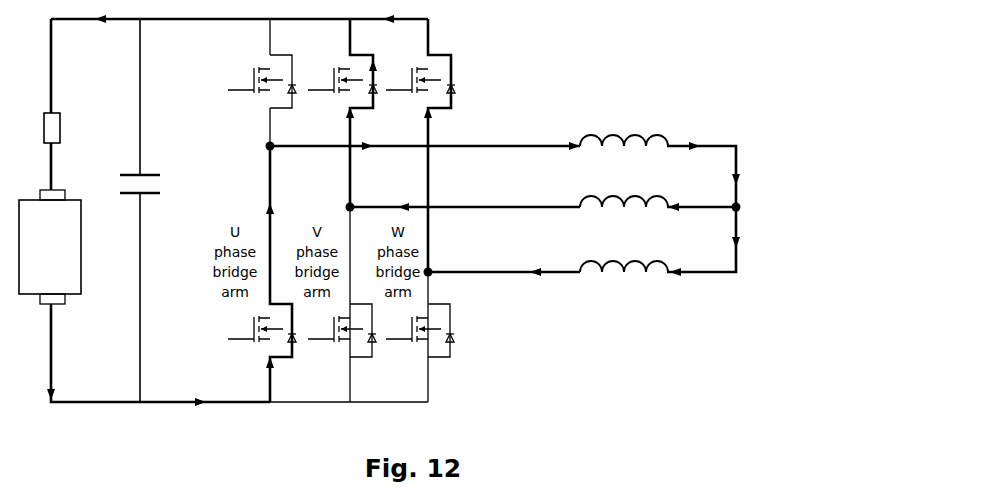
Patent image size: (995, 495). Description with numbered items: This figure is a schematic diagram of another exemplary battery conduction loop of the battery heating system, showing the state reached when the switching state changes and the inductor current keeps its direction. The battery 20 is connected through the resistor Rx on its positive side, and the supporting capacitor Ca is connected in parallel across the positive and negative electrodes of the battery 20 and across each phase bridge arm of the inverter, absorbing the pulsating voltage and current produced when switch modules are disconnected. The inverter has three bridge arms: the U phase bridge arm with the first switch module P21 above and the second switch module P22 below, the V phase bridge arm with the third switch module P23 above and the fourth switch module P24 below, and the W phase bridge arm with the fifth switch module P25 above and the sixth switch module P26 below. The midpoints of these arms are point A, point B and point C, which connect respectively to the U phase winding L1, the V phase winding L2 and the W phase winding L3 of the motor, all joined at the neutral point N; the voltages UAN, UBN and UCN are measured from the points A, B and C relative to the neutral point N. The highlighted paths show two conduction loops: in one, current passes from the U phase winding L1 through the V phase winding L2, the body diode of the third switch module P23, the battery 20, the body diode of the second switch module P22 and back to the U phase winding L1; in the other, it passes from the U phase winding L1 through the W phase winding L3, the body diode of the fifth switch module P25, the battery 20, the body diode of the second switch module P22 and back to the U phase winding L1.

The battery 20 is at (50, 248).
The resistor Rx is at (64, 128).
The supporting capacitor Ca is at (128, 186).
The first switch module P21 is at (266, 96).
The second switch module P22 is at (266, 352).
The third switch module P23 is at (346, 102).
The fourth switch module P24 is at (346, 346).
The fifth switch module P25 is at (424, 102).
The sixth switch module P26 is at (424, 346).
The U phase winding L1 is at (624, 153).
The V phase winding L2 is at (624, 213).
The W phase winding L3 is at (624, 278).
The point A is at (261, 146).
The point B is at (342, 207).
The point C is at (435, 283).
The neutral point N is at (743, 208).